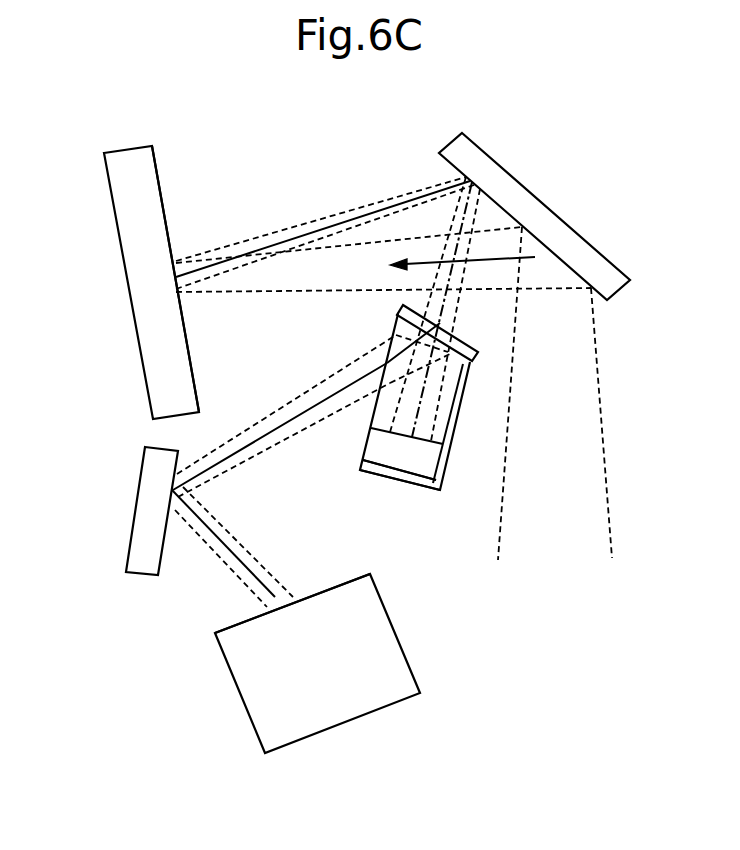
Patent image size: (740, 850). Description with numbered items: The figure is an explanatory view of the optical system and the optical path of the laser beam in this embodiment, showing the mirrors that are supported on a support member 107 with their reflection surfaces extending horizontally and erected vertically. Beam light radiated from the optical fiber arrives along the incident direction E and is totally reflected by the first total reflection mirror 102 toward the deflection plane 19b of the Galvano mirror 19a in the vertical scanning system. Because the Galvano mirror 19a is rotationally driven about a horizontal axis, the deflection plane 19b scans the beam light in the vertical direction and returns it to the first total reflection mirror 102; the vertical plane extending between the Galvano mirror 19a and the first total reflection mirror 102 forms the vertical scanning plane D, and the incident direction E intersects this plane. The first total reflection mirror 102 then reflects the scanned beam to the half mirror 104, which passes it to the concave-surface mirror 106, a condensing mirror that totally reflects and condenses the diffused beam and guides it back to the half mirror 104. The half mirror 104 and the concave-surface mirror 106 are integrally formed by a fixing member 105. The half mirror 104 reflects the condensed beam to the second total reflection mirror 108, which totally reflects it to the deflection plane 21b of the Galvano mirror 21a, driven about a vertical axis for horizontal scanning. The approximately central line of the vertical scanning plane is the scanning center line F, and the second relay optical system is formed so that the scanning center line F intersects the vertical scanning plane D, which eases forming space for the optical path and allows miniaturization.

The Galvano mirror 19a is at (122, 151).
The deflection plane 19b is at (158, 184).
The first total reflection mirror 102 is at (546, 203).
The half mirror 104 is at (400, 305).
The fixing member 105 is at (463, 418).
The concave-surface mirror 106 is at (386, 462).
The support member 107 is at (543, 661).
The second total reflection mirror 108 is at (137, 498).
The Galvano mirror 21a is at (393, 623).
The deflection plane 21b is at (242, 620).
The vertical scanning plane D is at (222, 256).
The incident direction E is at (487, 262).
The scanning center line F is at (438, 199).